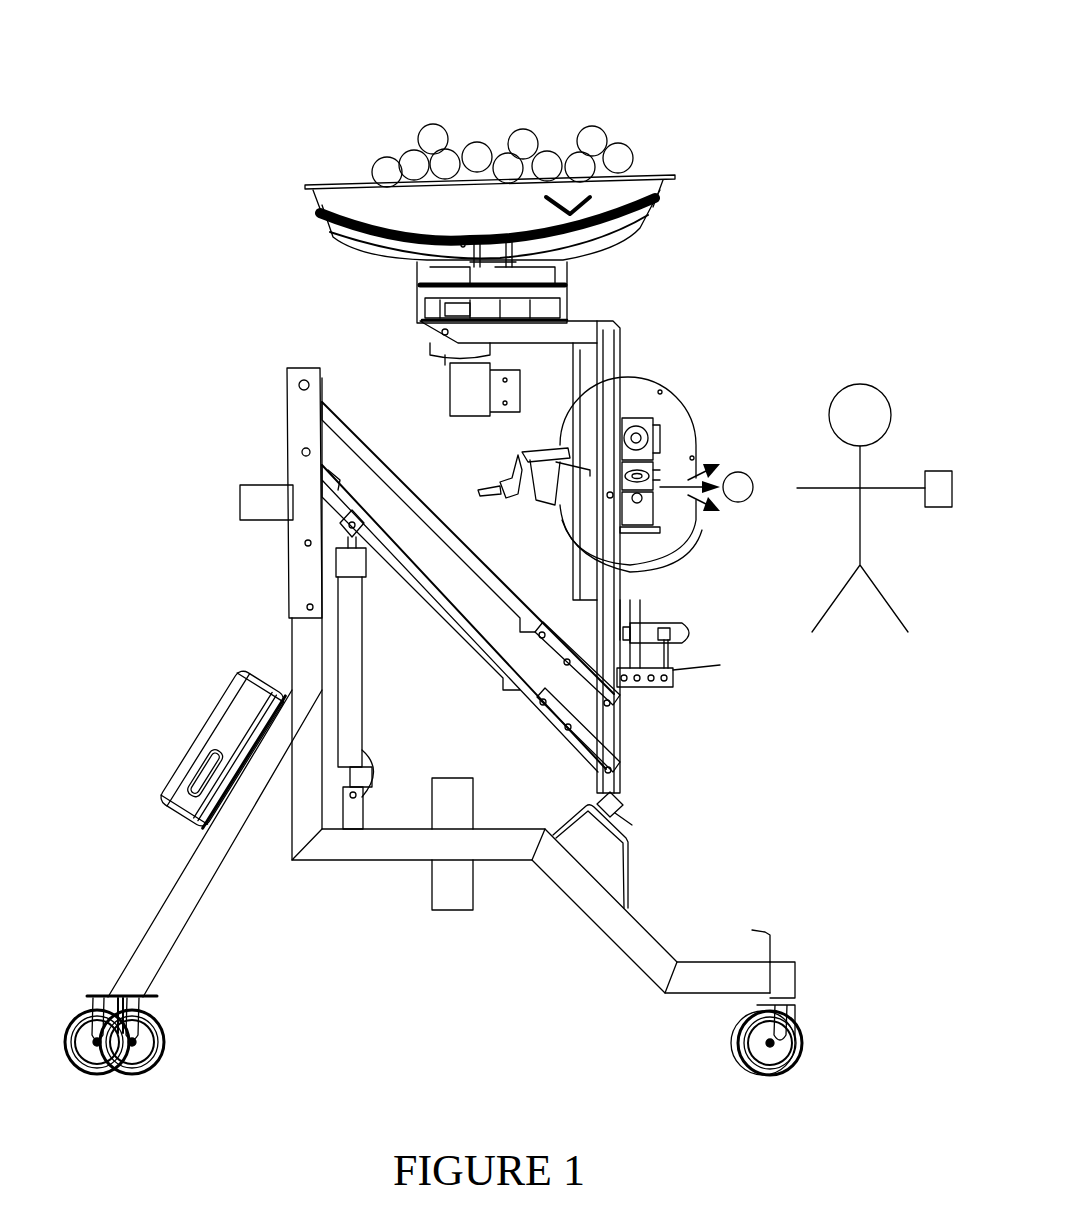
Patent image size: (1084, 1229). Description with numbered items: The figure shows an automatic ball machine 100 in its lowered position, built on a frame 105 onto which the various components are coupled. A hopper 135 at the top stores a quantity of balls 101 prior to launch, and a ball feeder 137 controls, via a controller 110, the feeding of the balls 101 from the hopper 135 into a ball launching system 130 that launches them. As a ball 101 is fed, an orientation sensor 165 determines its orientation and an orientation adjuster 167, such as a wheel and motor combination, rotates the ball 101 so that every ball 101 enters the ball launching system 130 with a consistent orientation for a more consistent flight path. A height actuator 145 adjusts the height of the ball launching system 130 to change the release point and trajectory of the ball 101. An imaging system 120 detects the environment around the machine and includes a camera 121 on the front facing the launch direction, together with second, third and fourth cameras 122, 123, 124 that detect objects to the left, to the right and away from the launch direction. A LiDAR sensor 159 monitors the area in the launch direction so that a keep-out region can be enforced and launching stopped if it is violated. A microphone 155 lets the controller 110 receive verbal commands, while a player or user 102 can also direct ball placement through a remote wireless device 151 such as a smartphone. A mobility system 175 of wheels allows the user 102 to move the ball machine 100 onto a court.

The automatic ball machine 100 is at (120, 28).
The balls 101 is at (762, 464).
The player or user 102 is at (855, 360).
The frame 105 is at (330, 912).
The controller 110 is at (214, 636).
The imaging system 120 is at (705, 612).
The camera 121 is at (697, 634).
The second camera 122 is at (462, 797).
The third camera 123 is at (432, 887).
The fourth camera 124 is at (240, 503).
The ball launching system 130 is at (718, 396).
The hopper 135 is at (662, 62).
The ball feeder 137 is at (620, 292).
The height actuator 145 is at (362, 672).
The remote wireless device 151 is at (938, 484).
The microphone 155 is at (235, 748).
The LiDAR sensor 159 is at (680, 600).
The orientation sensor 165 is at (480, 489).
The orientation adjuster 167 is at (540, 478).
The mobility system 175 is at (198, 1052).